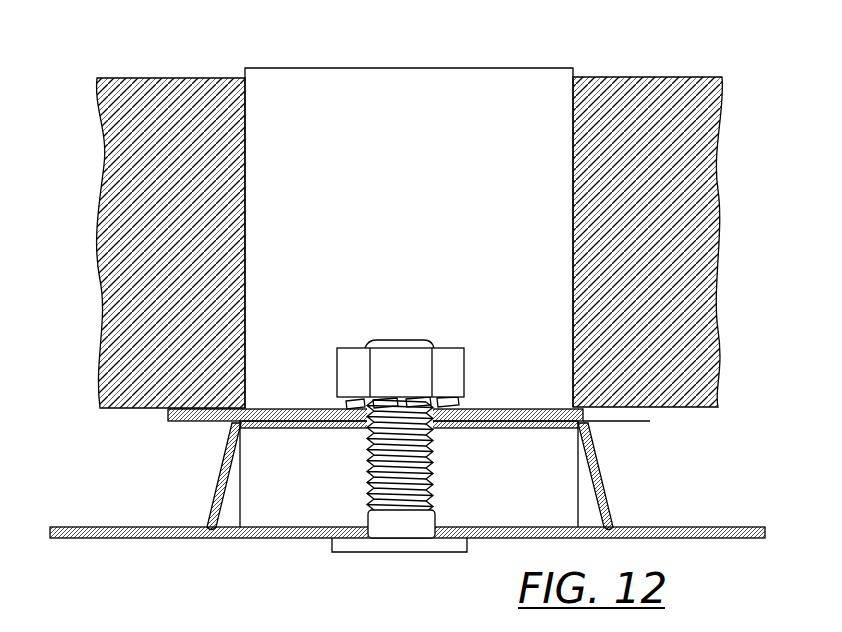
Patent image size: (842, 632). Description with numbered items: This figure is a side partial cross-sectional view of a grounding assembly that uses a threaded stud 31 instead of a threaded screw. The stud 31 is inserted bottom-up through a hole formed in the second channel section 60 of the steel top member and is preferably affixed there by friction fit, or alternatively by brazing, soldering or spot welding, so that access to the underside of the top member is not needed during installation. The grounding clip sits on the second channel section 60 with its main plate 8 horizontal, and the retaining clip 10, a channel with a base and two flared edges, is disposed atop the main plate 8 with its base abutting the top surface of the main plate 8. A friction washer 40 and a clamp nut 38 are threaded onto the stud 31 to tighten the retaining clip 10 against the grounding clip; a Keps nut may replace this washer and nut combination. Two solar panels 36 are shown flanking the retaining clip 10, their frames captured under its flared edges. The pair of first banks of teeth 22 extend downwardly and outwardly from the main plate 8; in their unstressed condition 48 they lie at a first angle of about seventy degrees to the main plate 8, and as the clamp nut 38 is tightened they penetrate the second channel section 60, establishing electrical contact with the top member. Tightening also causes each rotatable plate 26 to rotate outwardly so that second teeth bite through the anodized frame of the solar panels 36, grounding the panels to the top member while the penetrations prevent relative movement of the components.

The main plate 8 is at (590, 411).
The retaining clip 10 is at (534, 68).
The first banks of teeth 22 is at (208, 503).
The rotatable plate 26 is at (409, 474).
The threaded stud 31 is at (367, 458).
The solar panel 36 is at (156, 78).
The clamp nut 38 is at (464, 384).
The friction washer 40 is at (348, 405).
The unstressed condition 48 is at (220, 461).
The second channel section 60 is at (688, 527).